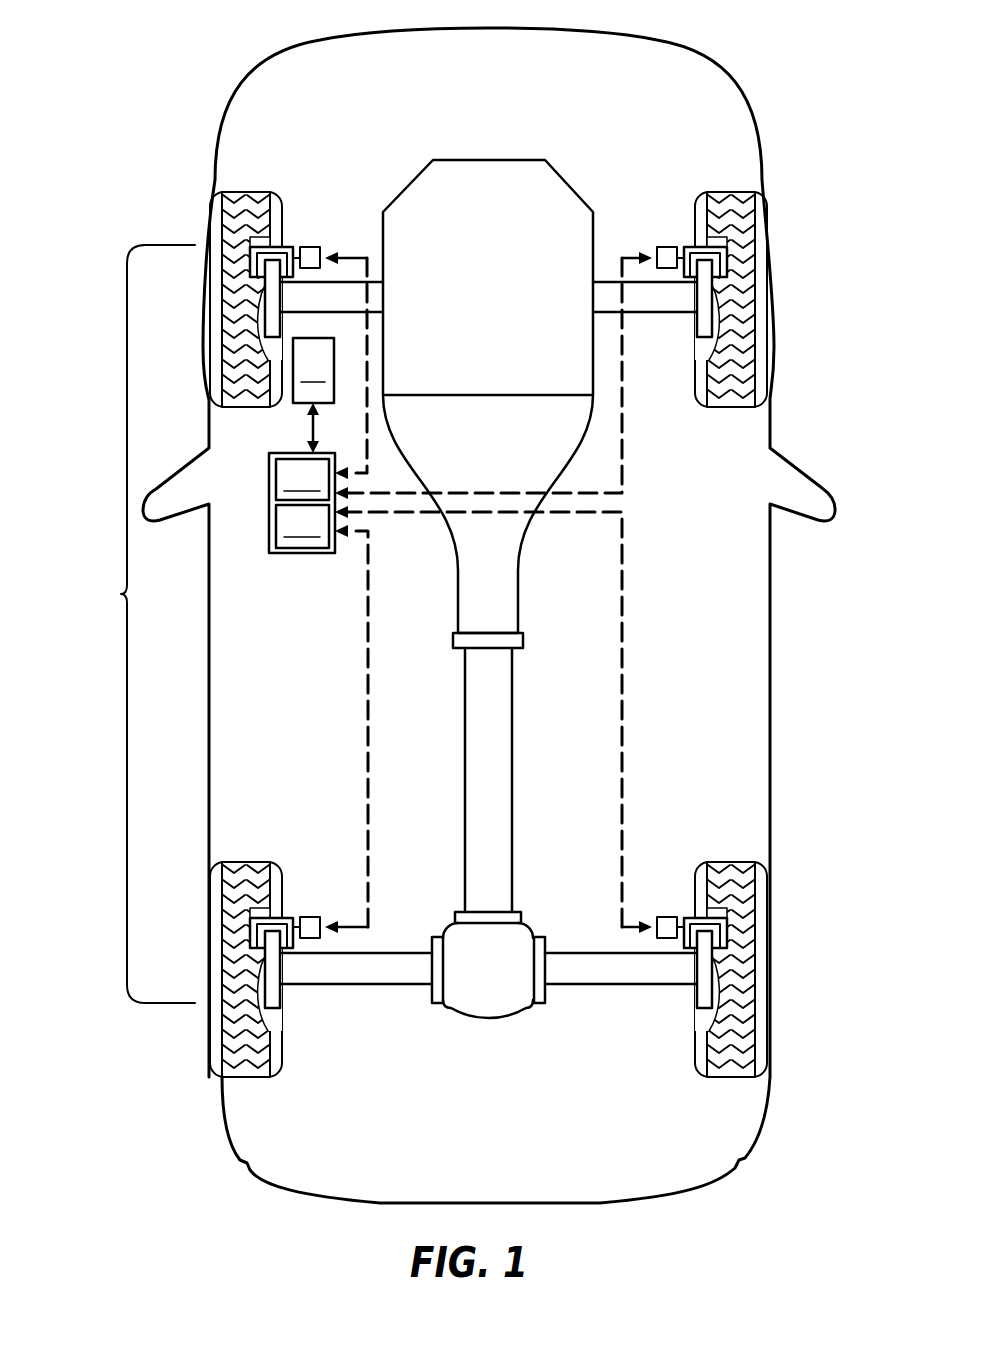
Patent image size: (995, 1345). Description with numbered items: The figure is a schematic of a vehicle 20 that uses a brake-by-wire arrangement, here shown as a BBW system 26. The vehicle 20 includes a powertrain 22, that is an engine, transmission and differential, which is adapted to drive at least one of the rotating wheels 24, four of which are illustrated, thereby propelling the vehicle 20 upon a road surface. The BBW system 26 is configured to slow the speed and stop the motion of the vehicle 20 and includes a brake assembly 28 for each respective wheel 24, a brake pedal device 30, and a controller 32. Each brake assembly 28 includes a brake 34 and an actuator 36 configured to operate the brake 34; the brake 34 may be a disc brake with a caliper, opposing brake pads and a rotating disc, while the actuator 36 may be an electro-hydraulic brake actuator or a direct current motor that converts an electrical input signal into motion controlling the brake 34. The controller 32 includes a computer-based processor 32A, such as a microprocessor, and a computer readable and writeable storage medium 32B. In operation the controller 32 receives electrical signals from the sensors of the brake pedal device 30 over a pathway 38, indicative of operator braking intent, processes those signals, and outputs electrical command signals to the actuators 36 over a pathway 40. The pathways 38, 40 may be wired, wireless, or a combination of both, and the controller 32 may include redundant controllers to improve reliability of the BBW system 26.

The vehicle 20 is at (744, 68).
The powertrain 22 is at (580, 175).
The rotating wheels 24 is at (770, 260).
The BBW system 26 is at (121, 594).
The brake assembly 28 is at (488, 574).
The brake pedal device 30 is at (313, 370).
The controller 32 is at (290, 530).
The computer-based processor 32A is at (302, 479).
The computer readable and writeable storage medium 32B is at (302, 526).
The brake 34 is at (284, 247).
The actuator 36 is at (312, 247).
The pathway 38 is at (309, 428).
The pathway 40 is at (368, 368).